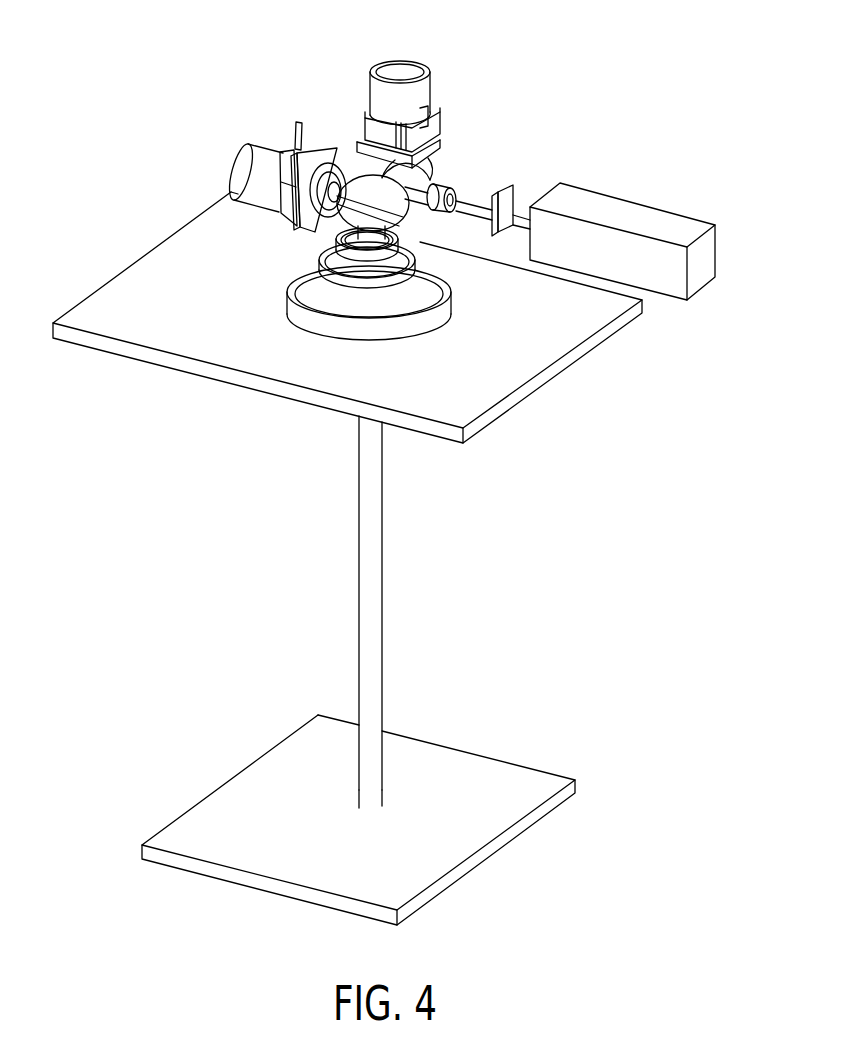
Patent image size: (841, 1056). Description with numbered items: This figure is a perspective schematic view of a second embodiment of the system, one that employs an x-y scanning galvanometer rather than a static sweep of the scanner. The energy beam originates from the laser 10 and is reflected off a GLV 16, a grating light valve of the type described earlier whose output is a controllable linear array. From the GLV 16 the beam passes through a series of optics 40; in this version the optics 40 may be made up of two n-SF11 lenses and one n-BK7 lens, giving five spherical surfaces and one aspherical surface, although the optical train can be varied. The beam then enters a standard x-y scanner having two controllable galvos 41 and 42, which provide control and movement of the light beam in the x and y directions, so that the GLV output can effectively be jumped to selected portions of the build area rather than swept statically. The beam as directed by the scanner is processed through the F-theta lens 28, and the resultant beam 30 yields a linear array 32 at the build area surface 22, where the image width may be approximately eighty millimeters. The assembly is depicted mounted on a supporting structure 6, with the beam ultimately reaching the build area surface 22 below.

The table top 6 is at (125, 268).
The laser 10 is at (627, 215).
The GLV 16 is at (513, 185).
The build area surface 22 is at (525, 763).
The F-theta lens 28 is at (395, 278).
The resultant beam 30 is at (383, 638).
The linear array 32 is at (372, 808).
The optics 40 is at (442, 184).
The galvo 41 is at (370, 72).
The galvo 42 is at (237, 147).